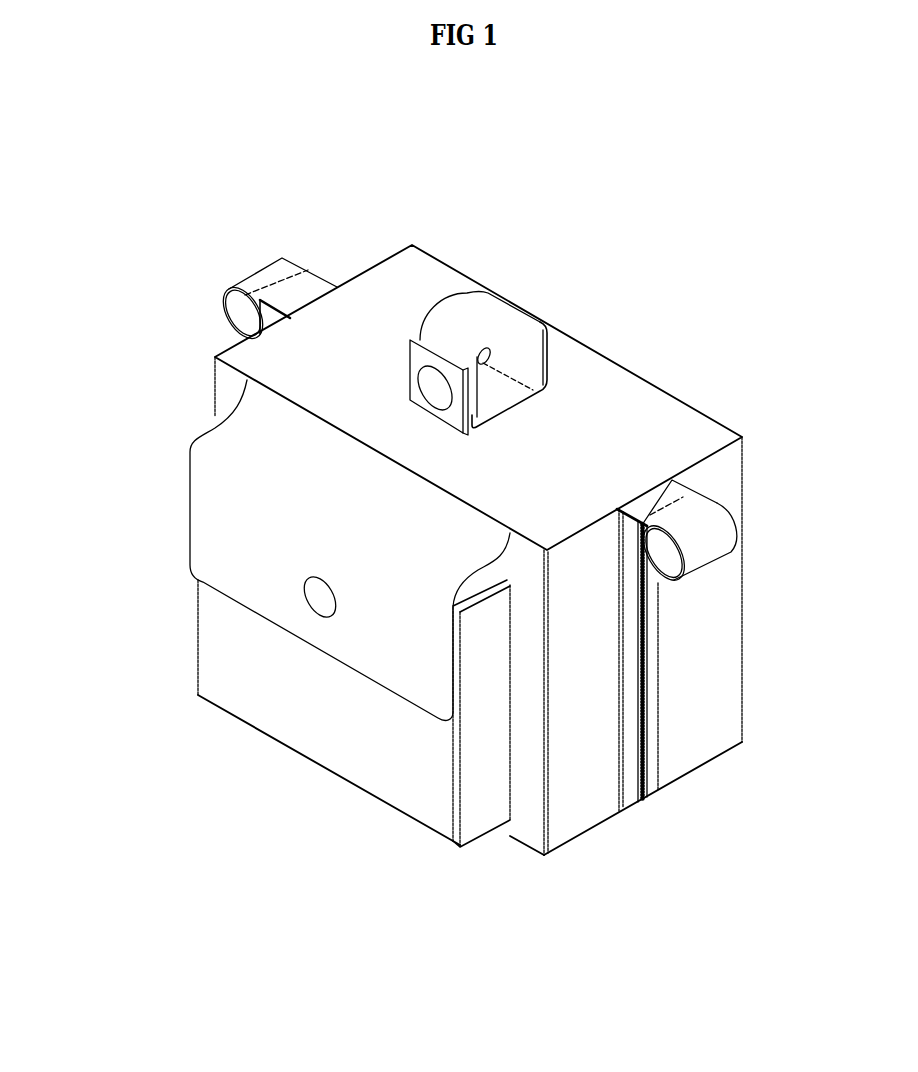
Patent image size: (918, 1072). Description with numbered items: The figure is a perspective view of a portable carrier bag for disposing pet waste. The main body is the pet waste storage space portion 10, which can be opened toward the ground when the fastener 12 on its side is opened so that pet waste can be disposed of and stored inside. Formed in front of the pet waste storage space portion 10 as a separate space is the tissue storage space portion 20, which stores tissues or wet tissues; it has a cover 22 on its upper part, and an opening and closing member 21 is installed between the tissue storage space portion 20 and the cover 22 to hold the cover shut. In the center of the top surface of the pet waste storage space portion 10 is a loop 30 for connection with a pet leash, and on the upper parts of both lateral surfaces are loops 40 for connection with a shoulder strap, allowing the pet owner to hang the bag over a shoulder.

The pet waste storage space portion 10 is at (700, 727).
The fastener 12 is at (650, 787).
The tissue storage space portion 20 is at (479, 787).
The opening and closing member 21 is at (310, 590).
The cover 22 is at (213, 512).
The loop for connection with a pet leash 30 is at (497, 312).
The loop for connection with a shoulder strap 40 is at (263, 278).